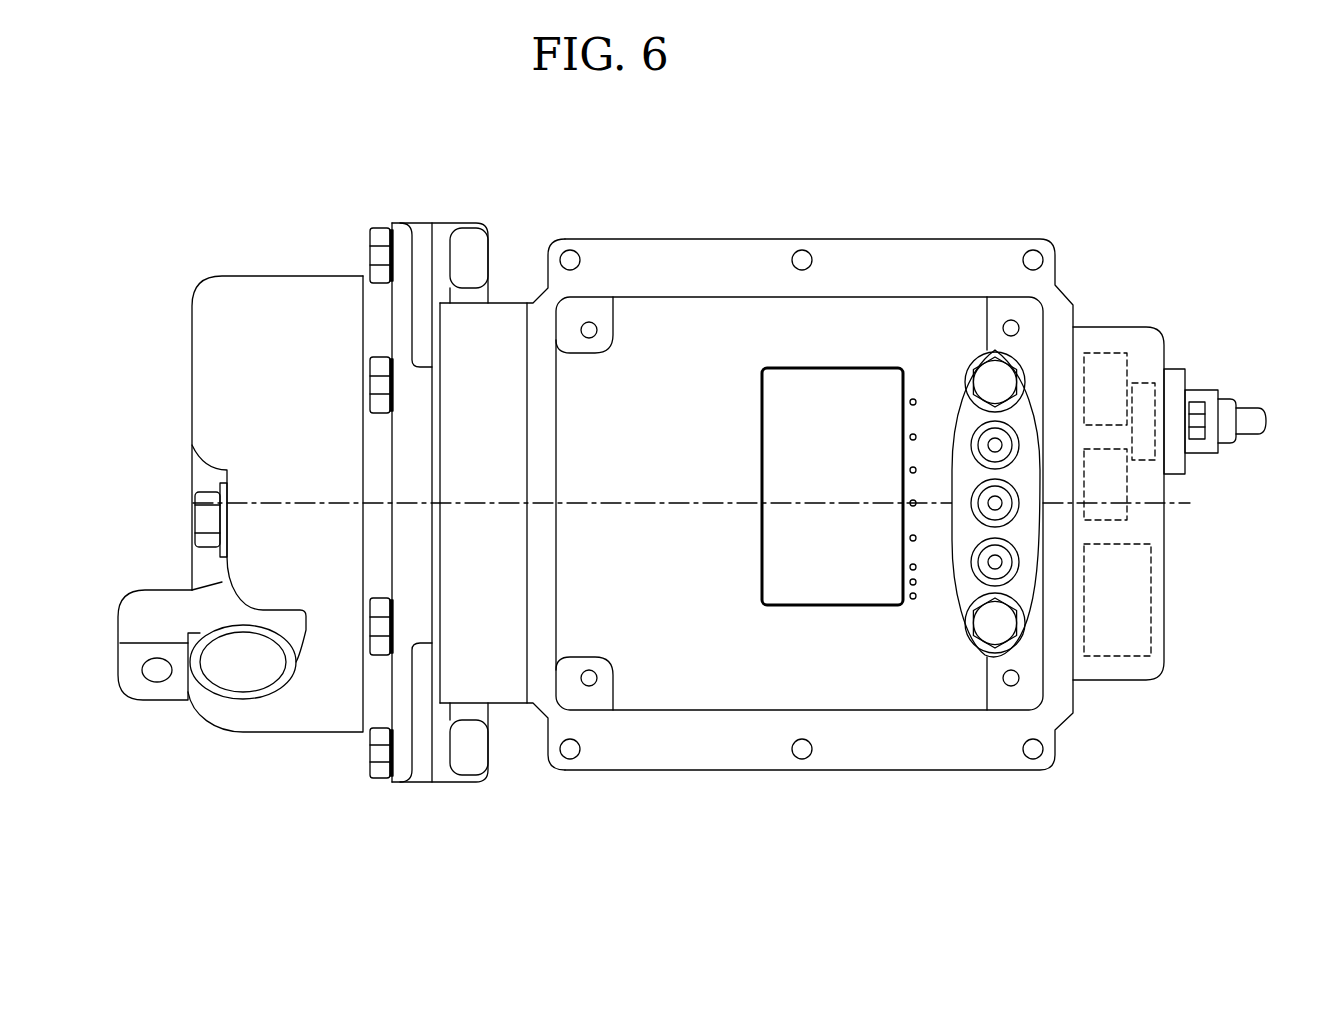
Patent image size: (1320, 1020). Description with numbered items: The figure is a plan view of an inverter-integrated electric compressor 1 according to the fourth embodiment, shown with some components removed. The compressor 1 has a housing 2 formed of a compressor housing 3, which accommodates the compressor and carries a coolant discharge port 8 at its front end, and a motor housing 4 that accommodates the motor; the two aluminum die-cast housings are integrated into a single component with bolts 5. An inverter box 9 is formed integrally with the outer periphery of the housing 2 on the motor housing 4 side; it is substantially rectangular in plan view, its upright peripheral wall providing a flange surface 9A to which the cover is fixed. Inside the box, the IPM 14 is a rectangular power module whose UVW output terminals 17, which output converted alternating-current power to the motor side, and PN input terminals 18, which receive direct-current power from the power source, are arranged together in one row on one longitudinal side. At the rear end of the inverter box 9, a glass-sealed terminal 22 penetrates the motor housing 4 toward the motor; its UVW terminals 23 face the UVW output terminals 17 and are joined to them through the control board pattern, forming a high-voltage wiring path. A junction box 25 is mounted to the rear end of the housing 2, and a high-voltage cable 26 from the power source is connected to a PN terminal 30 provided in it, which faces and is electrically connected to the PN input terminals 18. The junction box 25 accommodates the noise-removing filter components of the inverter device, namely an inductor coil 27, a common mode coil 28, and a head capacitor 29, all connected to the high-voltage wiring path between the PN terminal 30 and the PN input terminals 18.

The inverter-integrated electric compressor 1 is at (490, 174).
The housing 2 is at (312, 260).
The compressor housing 3 is at (208, 347).
The motor housing 4 is at (527, 746).
The bolts 5 is at (378, 753).
The coolant discharge port 8 is at (243, 676).
The inverter box 9 is at (732, 237).
The flange surface 9A is at (910, 258).
The IPM 14 is at (845, 608).
The UVW output terminals 17 is at (896, 462).
The PN input terminals 18 is at (896, 393).
The glass-sealed terminal 22 is at (965, 420).
The UVW terminals 23 is at (988, 566).
The junction box 25 is at (1147, 528).
The high-voltage cable 26 is at (1240, 418).
The inductor coil 27 is at (1103, 352).
The common mode coil 28 is at (1127, 484).
The head capacitor 29 is at (1151, 622).
The PN terminal 30 is at (1143, 382).